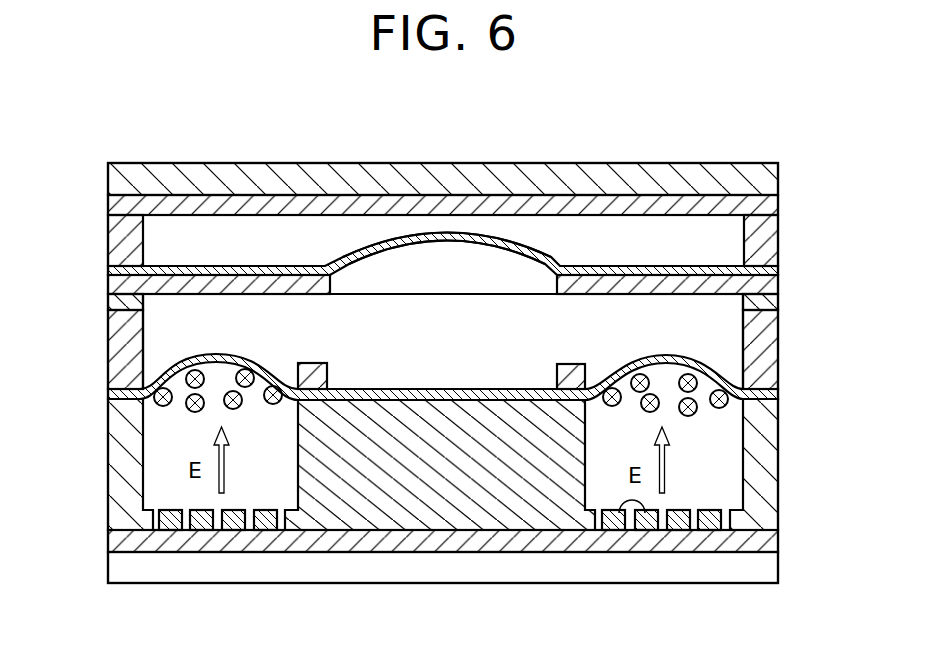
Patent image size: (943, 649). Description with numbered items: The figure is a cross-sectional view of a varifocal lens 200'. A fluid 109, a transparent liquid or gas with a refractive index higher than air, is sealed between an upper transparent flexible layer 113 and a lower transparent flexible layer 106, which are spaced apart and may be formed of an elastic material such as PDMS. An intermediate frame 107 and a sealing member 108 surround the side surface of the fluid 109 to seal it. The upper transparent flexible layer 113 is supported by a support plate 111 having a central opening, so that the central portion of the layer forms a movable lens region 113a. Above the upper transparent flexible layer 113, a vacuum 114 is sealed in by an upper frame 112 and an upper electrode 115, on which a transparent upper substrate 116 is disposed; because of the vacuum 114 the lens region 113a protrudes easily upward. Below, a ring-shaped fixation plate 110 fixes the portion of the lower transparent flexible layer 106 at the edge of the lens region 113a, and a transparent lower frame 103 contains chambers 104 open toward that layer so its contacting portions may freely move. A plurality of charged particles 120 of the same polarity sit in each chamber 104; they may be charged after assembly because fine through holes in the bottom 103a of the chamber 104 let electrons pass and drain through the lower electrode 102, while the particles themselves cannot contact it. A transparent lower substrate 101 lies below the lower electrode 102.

The varifocal lens 200' is at (402, 332).
The lower substrate 101 is at (772, 573).
The lower electrode 102 is at (772, 543).
The lower frame 103 is at (772, 505).
The bottom of the chamber 103a is at (622, 514).
The chamber 104 is at (733, 467).
The lower transparent flexible layer 106 is at (772, 398).
The intermediate frame 107 is at (772, 362).
The sealing member 108 is at (772, 306).
The fluid 109 is at (153, 338).
The fixation plate 110 is at (313, 375).
The support plate 111 is at (772, 283).
The upper frame 112 is at (772, 247).
The upper transparent flexible layer 113 is at (220, 266).
The lens region 113a is at (447, 232).
The vacuum 114 is at (550, 236).
The upper electrode 115 is at (772, 212).
The upper substrate 116 is at (772, 183).
The charged particles 120 is at (695, 412).